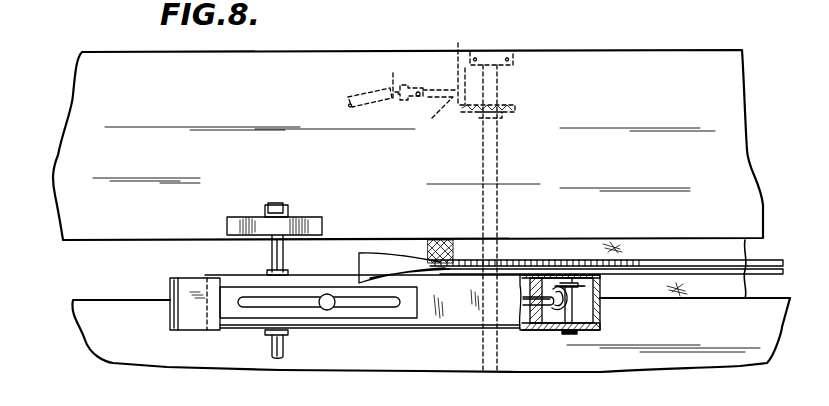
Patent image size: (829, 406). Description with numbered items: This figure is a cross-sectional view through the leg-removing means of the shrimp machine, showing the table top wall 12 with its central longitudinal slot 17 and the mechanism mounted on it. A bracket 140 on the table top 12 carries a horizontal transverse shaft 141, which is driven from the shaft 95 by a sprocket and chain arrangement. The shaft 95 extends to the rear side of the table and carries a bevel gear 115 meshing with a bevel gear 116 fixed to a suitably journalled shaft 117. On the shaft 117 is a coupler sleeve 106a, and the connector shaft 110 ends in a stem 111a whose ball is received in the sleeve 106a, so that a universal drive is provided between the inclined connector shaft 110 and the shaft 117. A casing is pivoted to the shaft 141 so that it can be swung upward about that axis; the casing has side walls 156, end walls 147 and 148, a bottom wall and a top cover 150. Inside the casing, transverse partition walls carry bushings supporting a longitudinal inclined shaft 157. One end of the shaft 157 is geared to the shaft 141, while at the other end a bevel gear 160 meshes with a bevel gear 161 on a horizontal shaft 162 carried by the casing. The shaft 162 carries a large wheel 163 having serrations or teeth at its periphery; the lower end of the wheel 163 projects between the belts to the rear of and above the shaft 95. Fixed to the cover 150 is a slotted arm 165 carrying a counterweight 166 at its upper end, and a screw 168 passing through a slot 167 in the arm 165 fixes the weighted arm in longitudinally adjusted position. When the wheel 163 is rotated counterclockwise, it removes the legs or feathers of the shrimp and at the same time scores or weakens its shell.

The table top wall 12 is at (277, 44).
The central longitudinal slot 17 is at (100, 270).
The shaft 95 is at (498, 135).
The coupler sleeve 106a is at (413, 83).
The connector shaft 110 is at (362, 82).
The stem 111a is at (391, 76).
The bevel gear 115 is at (515, 105).
The bevel gear 116 is at (483, 52).
The shaft 117 is at (437, 103).
The bracket 140 is at (243, 217).
The horizontal transverse shaft 141 is at (272, 252).
The end wall 147 is at (597, 315).
The end wall 148 is at (205, 330).
The top cover 150 is at (425, 322).
The side walls 156 is at (548, 273).
The longitudinal inclined shaft 157 is at (526, 330).
The bevel gear 160 is at (538, 330).
The bevel gear 161 is at (597, 290).
The shaft 162 is at (572, 315).
The large wheel 163 is at (640, 263).
The slotted arm 165 is at (235, 308).
The counterweight 166 is at (188, 307).
The slot 167 is at (283, 300).
The screw 168 is at (328, 308).